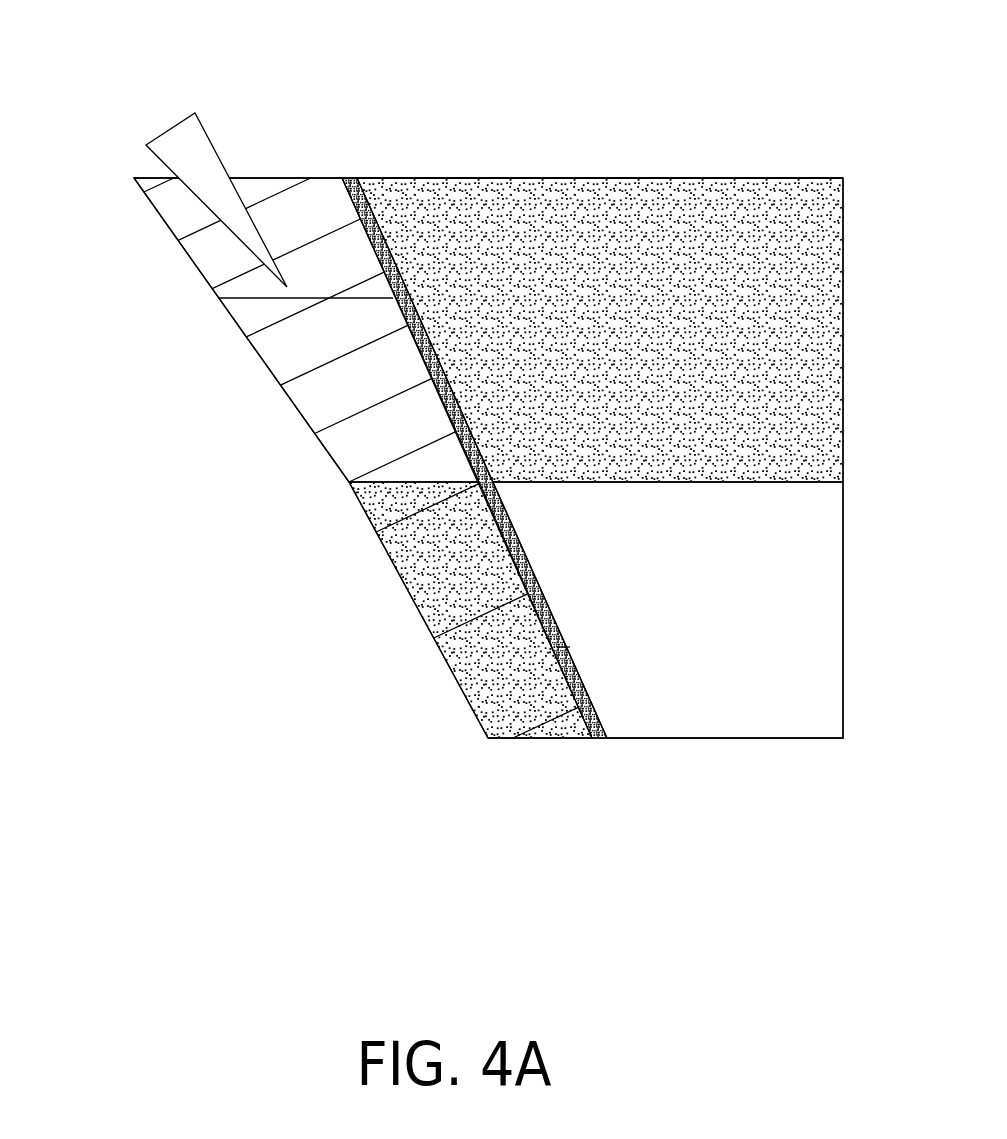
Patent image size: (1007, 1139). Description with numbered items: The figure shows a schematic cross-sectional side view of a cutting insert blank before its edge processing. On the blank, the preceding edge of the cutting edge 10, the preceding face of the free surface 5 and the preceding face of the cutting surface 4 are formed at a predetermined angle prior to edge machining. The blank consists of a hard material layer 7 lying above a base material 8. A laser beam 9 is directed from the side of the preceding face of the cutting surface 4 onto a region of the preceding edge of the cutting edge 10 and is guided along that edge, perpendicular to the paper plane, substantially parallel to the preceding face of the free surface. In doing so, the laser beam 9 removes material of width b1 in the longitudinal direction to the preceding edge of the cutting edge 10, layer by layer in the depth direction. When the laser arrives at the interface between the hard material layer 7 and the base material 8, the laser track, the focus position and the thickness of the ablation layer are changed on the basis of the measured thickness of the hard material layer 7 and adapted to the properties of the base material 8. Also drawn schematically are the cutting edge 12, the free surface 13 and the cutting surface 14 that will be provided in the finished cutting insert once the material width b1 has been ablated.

The preceding face of the cutting surface 4 is at (552, 178).
The preceding face of the free surface 5 is at (288, 449).
The hard material layer 7 is at (630, 333).
The base material 8 is at (657, 583).
The laser beam 9 is at (170, 129).
The preceding edge of the cutting edge 10 is at (134, 178).
The cutting edge 12 is at (352, 177).
The free surface 13 is at (468, 560).
The cutting surface 14 is at (673, 178).
The material width b1 is at (305, 299).